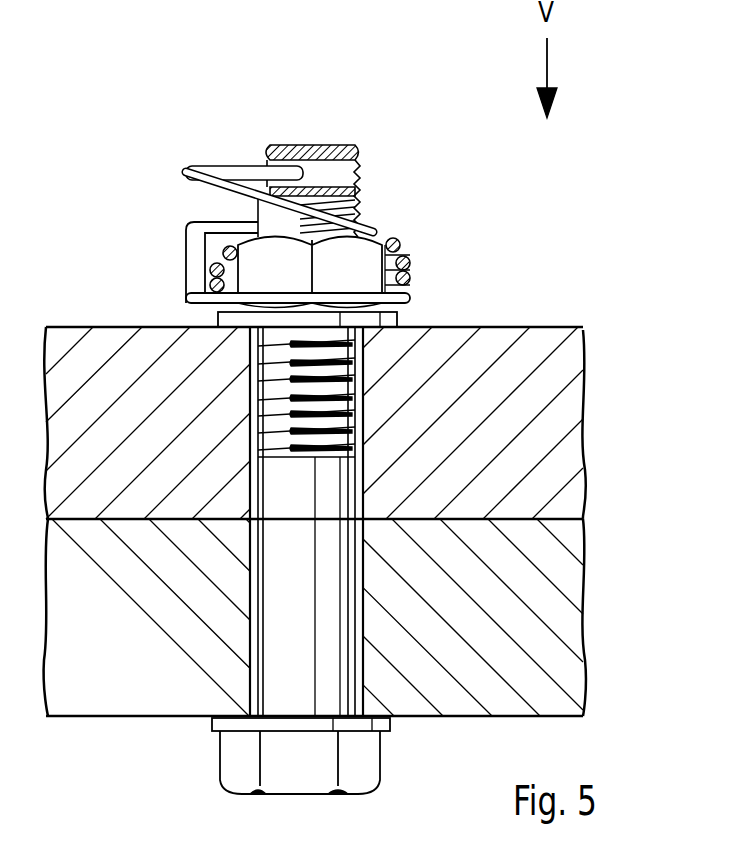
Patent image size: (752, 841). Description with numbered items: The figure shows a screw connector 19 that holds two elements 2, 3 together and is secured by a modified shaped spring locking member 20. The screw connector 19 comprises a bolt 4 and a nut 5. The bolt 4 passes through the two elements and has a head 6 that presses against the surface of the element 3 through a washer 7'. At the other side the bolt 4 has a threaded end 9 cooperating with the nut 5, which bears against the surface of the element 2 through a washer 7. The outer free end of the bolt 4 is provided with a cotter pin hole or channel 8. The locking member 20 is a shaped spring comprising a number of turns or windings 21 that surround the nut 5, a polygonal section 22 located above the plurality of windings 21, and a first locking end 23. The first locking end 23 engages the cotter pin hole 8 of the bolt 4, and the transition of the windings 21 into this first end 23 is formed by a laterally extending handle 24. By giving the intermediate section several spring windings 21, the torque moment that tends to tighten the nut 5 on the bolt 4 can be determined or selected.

The element 2 is at (583, 432).
The element 3 is at (572, 641).
The bolt 4 is at (265, 648).
The nut 5 is at (255, 268).
The head 6 is at (368, 773).
The washer 7 is at (361, 300).
The washer 7' is at (273, 756).
The cotter pin hole 8 is at (367, 172).
The threaded end 9 is at (322, 398).
The screw connector 19 is at (590, 190).
The shaped spring locking member 20 is at (152, 132).
The spring windings 21 is at (420, 304).
The polygonal section 22 is at (396, 240).
The first locking end 23 is at (275, 148).
The handle 24 is at (208, 166).